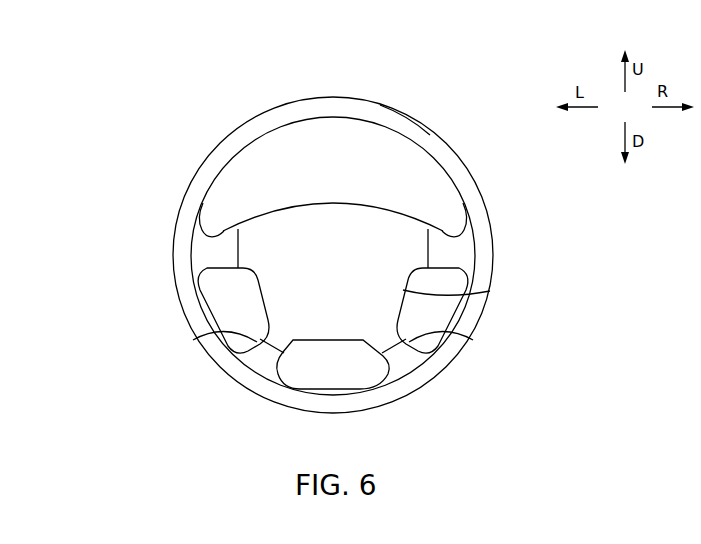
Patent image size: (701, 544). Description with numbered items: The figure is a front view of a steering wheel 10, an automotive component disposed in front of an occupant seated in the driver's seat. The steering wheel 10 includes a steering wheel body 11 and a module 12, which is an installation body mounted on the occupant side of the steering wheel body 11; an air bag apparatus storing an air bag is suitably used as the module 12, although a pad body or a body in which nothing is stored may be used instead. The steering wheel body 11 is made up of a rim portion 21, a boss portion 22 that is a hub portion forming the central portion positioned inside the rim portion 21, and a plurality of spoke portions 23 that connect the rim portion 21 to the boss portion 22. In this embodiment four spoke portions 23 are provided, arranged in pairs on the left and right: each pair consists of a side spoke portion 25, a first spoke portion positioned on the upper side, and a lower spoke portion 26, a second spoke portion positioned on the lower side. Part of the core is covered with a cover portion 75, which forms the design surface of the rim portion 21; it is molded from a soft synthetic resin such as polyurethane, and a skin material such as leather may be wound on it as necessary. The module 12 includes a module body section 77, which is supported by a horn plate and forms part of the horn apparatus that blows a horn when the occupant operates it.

The steering wheel 10 is at (390, 54).
The steering wheel body 11 is at (450, 137).
The rim portion 21 is at (333, 97).
The cover portion 75 is at (403, 120).
The module 12 is at (333, 279).
The boss portion 22 is at (264, 212).
The spoke portions 23 is at (333, 271).
The side spoke portions 25 is at (333, 210).
The lower spoke portions 26 is at (331, 313).
The module body section 77 is at (490, 291).